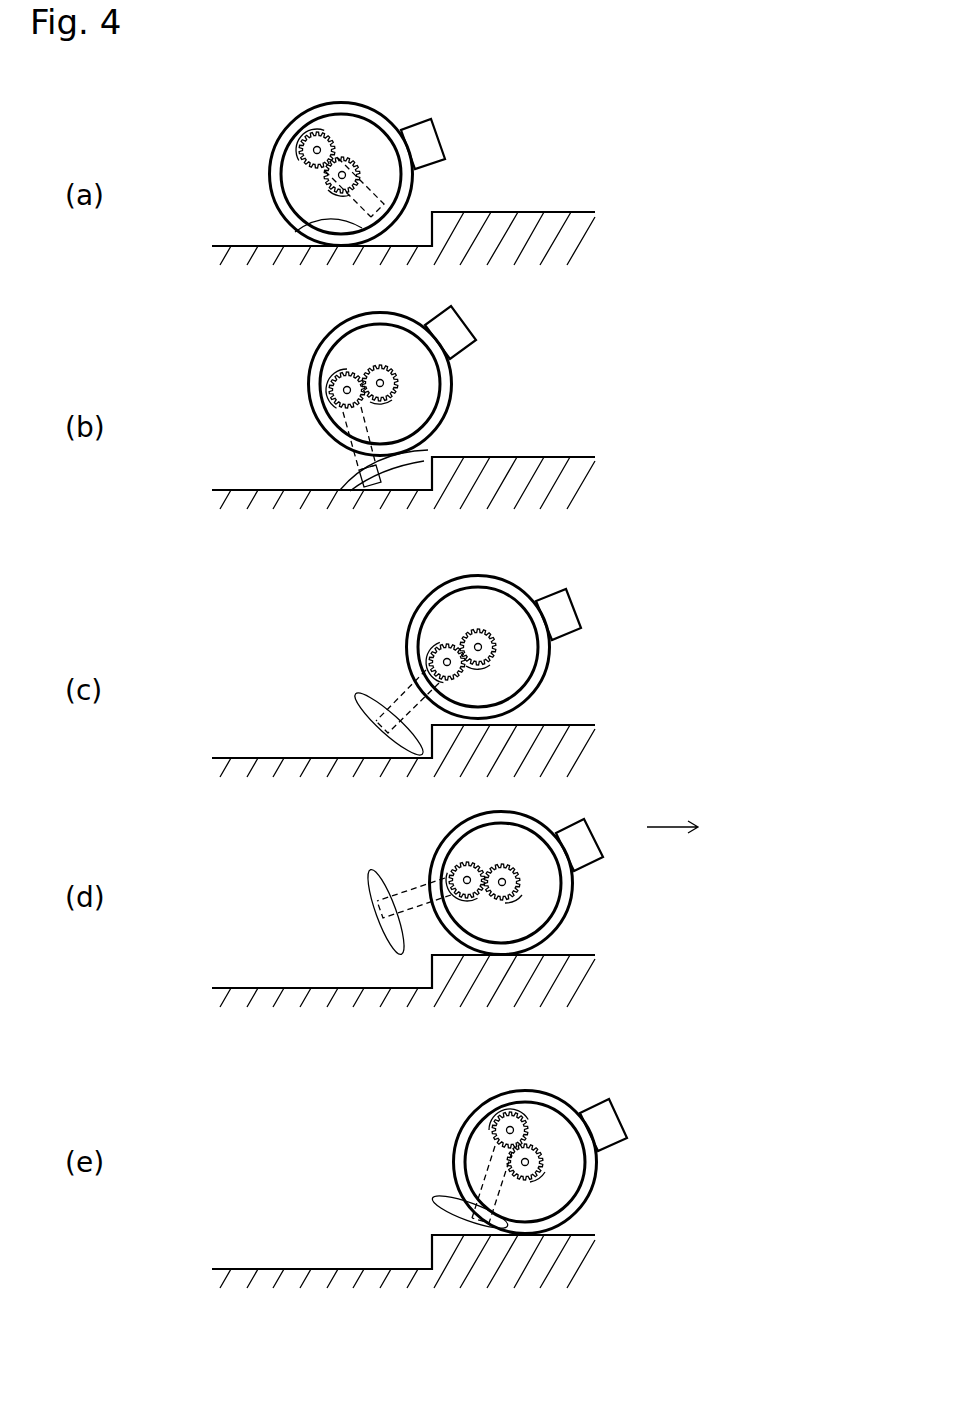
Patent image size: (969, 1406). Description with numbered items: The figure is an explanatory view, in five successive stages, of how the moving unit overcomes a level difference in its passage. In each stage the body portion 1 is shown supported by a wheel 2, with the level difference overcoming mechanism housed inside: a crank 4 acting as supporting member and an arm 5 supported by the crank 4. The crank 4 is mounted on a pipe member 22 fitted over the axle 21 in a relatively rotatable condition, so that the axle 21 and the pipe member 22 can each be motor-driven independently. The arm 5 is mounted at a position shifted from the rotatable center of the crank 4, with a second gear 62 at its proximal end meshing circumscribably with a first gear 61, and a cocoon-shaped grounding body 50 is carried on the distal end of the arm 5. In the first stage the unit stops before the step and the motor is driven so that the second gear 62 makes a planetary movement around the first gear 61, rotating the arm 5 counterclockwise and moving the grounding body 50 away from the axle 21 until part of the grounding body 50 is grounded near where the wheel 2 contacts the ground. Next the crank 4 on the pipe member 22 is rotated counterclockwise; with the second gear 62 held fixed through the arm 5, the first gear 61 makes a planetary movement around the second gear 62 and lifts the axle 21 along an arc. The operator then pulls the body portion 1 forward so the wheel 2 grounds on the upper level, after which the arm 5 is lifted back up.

The body portion 1 is at (447, 132).
The wheel 2 is at (347, 103).
The crank 4 is at (413, 174).
The arm 5 is at (398, 192).
The axle 21 is at (344, 174).
The pipe member 22 is at (316, 147).
The grounding body 50 is at (346, 222).
The first gear 61 is at (335, 185).
The second gear 62 is at (300, 150).